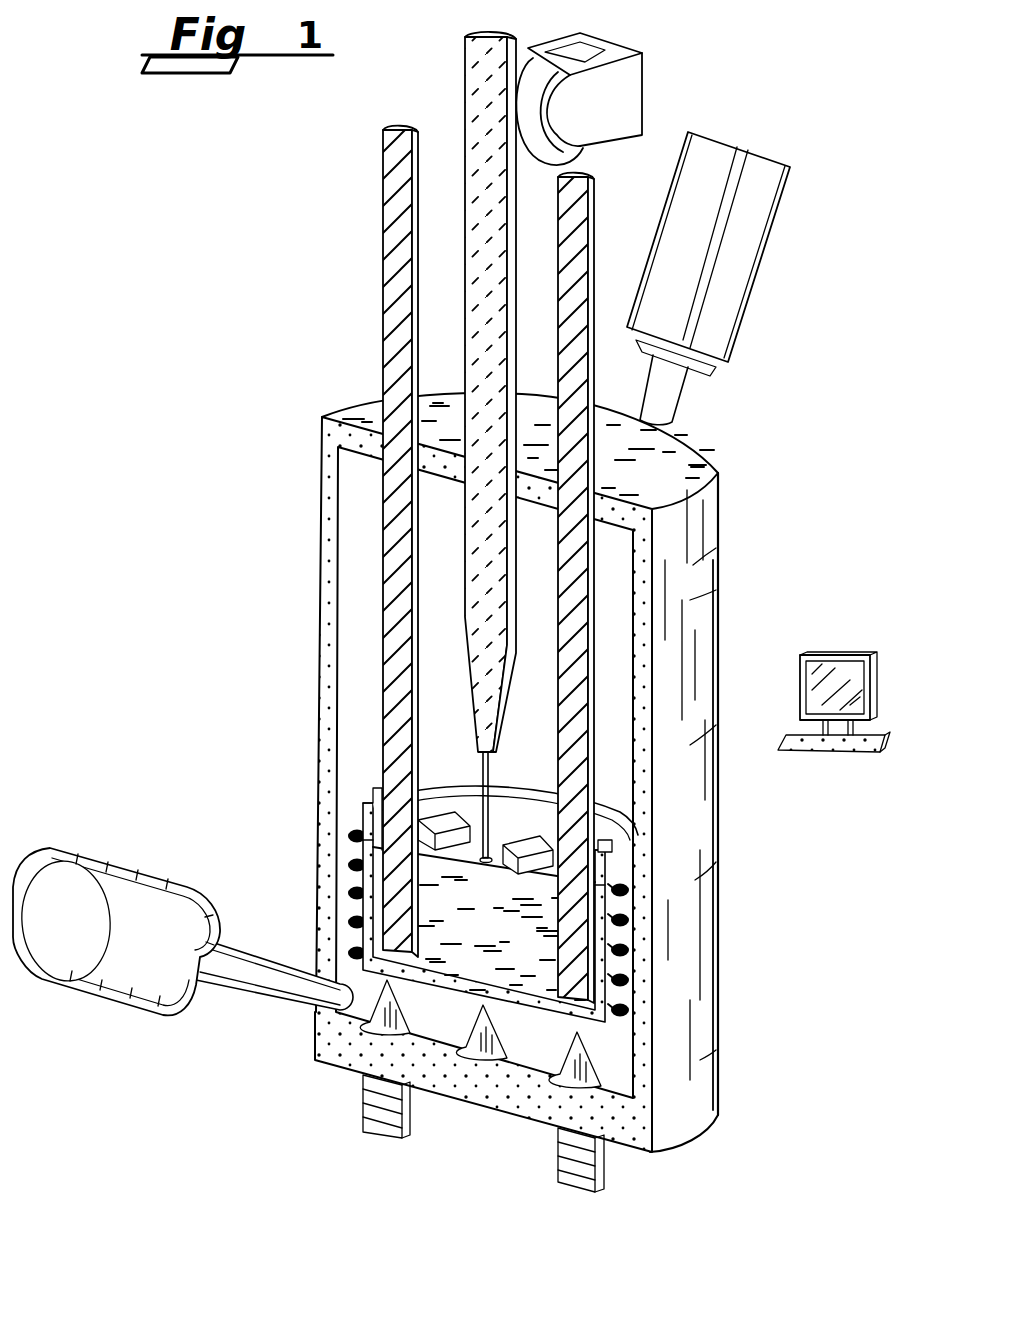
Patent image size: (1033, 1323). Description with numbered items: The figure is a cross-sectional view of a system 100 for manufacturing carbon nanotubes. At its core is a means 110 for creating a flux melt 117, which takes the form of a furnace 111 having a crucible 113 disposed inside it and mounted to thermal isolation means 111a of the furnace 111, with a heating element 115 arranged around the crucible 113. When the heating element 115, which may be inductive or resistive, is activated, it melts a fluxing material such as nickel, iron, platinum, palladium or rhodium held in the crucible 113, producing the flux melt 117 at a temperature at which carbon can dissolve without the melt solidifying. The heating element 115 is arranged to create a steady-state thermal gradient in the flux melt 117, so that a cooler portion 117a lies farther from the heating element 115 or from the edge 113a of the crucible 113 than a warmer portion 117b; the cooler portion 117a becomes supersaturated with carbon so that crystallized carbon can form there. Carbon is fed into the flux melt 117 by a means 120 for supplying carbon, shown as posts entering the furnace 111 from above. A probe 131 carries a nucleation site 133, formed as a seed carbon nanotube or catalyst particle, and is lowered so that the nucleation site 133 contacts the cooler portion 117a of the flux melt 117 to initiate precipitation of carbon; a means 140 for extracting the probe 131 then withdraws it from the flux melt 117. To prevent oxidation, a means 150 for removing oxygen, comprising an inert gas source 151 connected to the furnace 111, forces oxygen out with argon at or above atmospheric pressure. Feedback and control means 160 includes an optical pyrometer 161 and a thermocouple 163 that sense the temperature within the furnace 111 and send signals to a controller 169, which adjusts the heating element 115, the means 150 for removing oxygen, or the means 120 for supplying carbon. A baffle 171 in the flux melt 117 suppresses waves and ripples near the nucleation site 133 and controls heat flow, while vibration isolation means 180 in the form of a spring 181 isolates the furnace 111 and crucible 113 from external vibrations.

The system for manufacturing carbon nanotubes 100 is at (260, 336).
The means for creating flux melt 110 is at (313, 507).
The furnace 111 is at (324, 458).
The thermal isolation means 111a is at (483, 1052).
The crucible 113 is at (356, 915).
The edge of crucible 113a is at (372, 822).
The heating element 115 is at (350, 864).
The flux melt 117 is at (465, 951).
The cooler portion of flux melt 117a is at (540, 834).
The warmer portion of flux melt 117b is at (485, 800).
The means for supplying carbon 120 is at (383, 288).
The probe 131 is at (510, 300).
The nucleation site 133 is at (489, 768).
The means for extracting probe 140 is at (597, 148).
The means for removing oxygen 150 is at (200, 1015).
The inert gas source 151 is at (62, 985).
The feedback and control means 160 is at (862, 766).
The optical pyrometer 161 is at (753, 292).
The thermocouple 163 is at (378, 787).
The controller 169 is at (858, 653).
The baffle 171 is at (599, 846).
The vibration isolation means 180 is at (580, 1188).
The spring 181 is at (368, 1104).